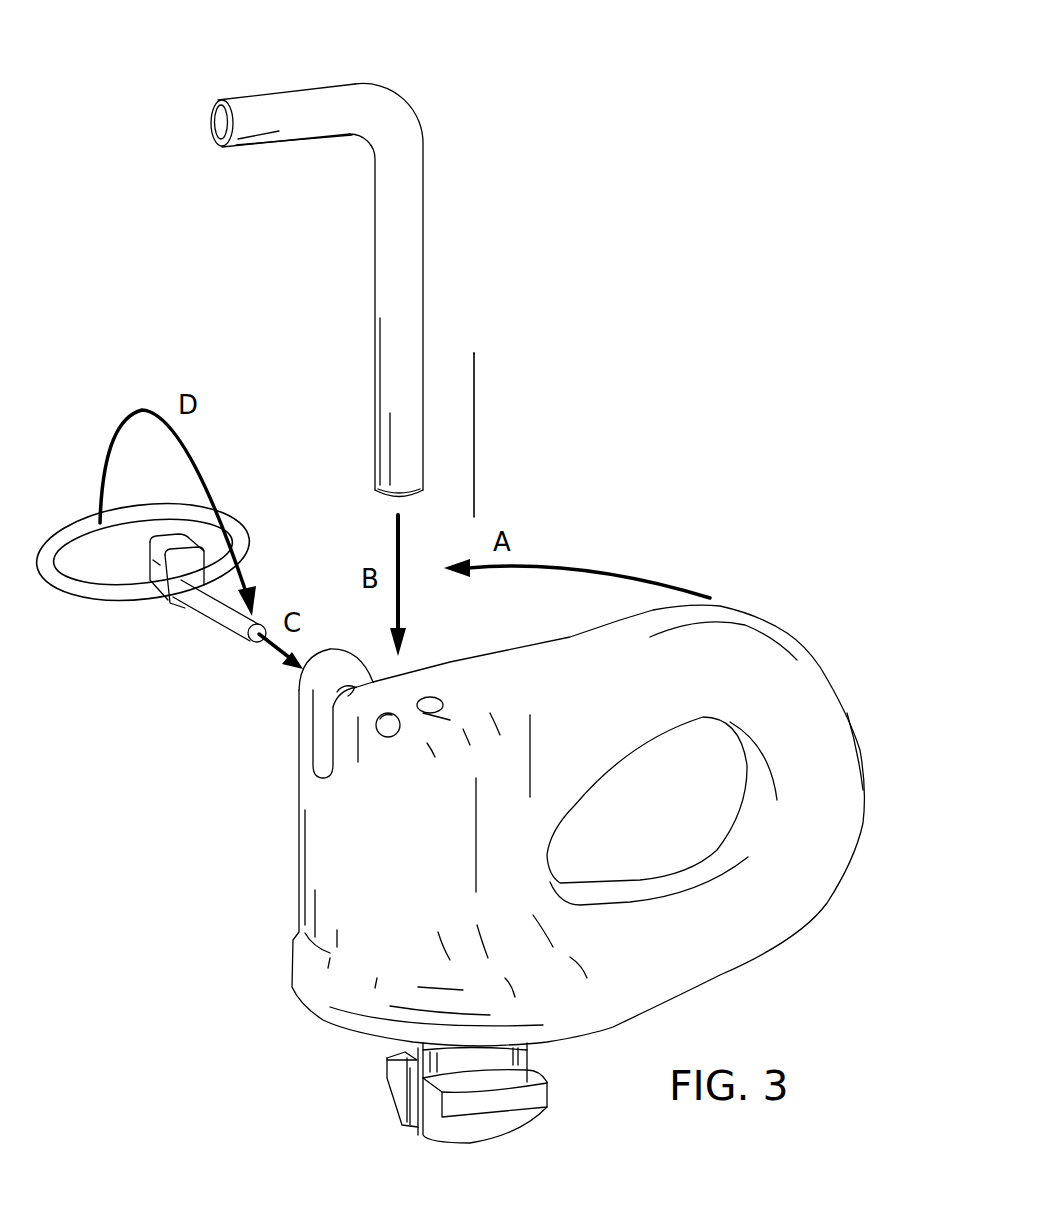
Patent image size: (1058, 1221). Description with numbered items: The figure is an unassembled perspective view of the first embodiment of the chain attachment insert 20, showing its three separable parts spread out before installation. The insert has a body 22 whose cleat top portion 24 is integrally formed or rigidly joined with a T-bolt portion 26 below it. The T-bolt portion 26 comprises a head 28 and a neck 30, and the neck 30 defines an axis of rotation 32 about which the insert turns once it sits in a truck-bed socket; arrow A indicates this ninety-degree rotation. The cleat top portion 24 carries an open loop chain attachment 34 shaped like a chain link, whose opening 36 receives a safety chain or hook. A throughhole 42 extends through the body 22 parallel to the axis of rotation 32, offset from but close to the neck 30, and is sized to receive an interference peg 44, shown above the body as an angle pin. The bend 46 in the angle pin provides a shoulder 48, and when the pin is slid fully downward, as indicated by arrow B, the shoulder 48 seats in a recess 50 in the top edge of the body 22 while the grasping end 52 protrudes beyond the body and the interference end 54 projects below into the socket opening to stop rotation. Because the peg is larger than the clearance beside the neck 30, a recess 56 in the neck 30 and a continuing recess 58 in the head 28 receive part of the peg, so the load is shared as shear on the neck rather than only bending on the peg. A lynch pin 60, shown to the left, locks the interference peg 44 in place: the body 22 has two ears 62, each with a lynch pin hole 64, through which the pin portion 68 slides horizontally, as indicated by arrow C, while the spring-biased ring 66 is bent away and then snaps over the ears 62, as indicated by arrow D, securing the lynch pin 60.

The chain attachment insert 20 is at (681, 230).
The body 22 is at (768, 565).
The cleat top portion 24 is at (636, 630).
The T-bolt portion 26 is at (527, 1063).
The head 28 is at (497, 1127).
The neck 30 is at (457, 1058).
The axis of rotation 32 is at (477, 428).
The open loop chain attachment 34 is at (807, 724).
The opening 36 is at (686, 812).
The throughhole 42 is at (428, 700).
The interference peg 44 is at (497, 191).
The bend 46 is at (373, 110).
The shoulder 48 is at (327, 137).
The recess 50 is at (315, 767).
The grasping end 52 is at (250, 110).
The interference end 54 is at (407, 460).
The recess 56 is at (412, 1062).
The recess 58 is at (418, 1121).
The lynch pin 60 is at (236, 440).
The ears 62 is at (323, 667).
The lynch pin hole 64 is at (396, 715).
The ring 66 is at (123, 517).
The pin portion 68 is at (213, 605).